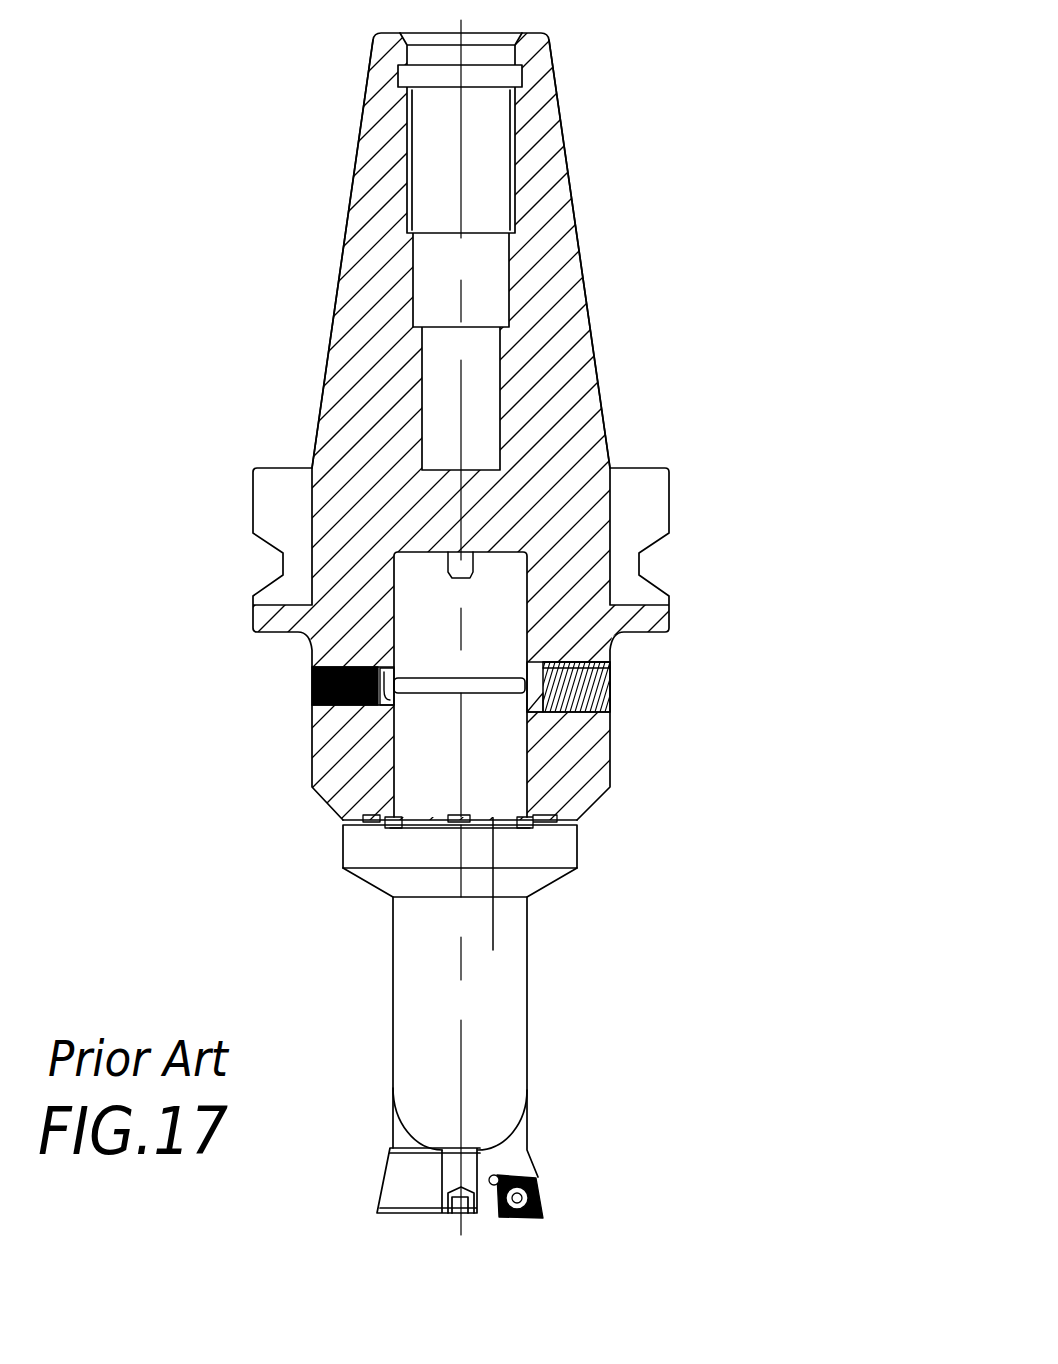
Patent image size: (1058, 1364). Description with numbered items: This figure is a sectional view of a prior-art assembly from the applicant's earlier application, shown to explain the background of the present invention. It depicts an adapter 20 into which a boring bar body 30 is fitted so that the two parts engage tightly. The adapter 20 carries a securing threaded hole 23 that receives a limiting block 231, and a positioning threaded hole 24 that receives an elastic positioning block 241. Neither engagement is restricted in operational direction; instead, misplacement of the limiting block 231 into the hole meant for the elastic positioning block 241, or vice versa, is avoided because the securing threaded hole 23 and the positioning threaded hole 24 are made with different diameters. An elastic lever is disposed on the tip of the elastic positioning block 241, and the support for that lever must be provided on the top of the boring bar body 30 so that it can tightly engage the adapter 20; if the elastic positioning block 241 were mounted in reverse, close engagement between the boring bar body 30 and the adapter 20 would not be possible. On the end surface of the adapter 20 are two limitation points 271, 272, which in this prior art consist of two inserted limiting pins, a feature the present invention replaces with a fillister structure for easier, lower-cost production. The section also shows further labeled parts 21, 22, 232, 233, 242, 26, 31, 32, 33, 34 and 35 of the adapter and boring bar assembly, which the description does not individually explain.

The adapter 20 is at (660, 405).
The tapered shank 21 is at (375, 250).
The receiving bore 22 is at (532, 603).
The securing threaded hole 23 is at (719, 765).
The limiting block 231 is at (543, 712).
The locking screw threaded portion 232 is at (608, 700).
The locking screw head 233 is at (610, 673).
The positioning threaded hole 24 is at (235, 754).
The elastic positioning block 241 is at (378, 710).
The sealing ring 242 is at (313, 678).
The coolant channel 26 is at (493, 950).
The limitation point 271 is at (547, 818).
The limitation point 272 is at (370, 822).
The boring bar body 30 is at (525, 1018).
The insert screw 31 is at (515, 1180).
The cutting insert 32 is at (543, 1205).
The set screw 33 is at (427, 587).
The cross pin 34 is at (447, 687).
The coolant tube 35 is at (457, 820).